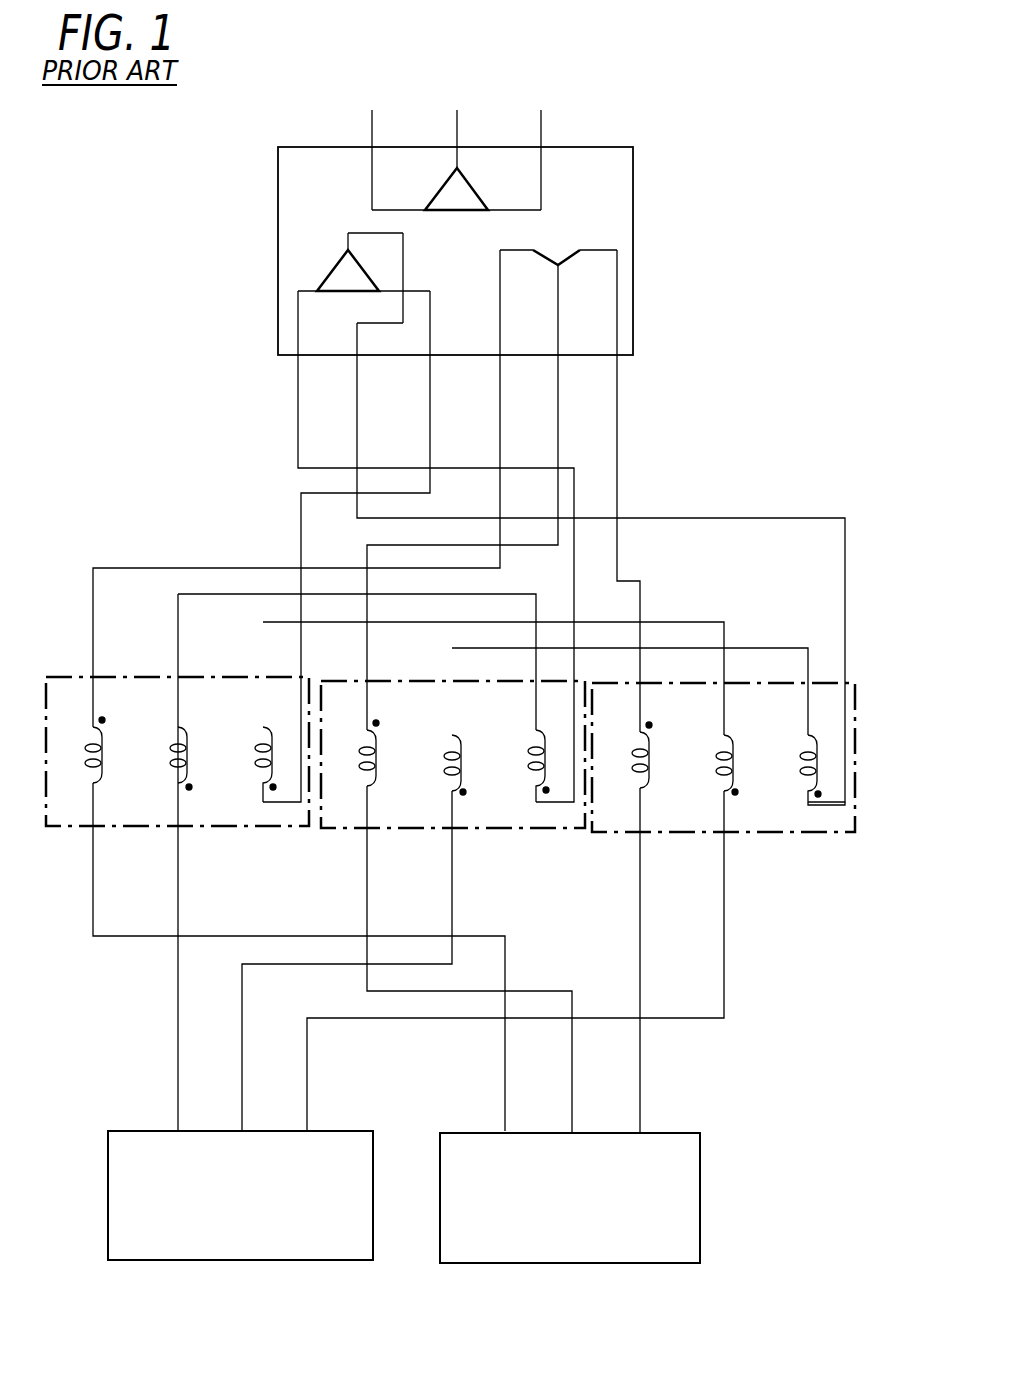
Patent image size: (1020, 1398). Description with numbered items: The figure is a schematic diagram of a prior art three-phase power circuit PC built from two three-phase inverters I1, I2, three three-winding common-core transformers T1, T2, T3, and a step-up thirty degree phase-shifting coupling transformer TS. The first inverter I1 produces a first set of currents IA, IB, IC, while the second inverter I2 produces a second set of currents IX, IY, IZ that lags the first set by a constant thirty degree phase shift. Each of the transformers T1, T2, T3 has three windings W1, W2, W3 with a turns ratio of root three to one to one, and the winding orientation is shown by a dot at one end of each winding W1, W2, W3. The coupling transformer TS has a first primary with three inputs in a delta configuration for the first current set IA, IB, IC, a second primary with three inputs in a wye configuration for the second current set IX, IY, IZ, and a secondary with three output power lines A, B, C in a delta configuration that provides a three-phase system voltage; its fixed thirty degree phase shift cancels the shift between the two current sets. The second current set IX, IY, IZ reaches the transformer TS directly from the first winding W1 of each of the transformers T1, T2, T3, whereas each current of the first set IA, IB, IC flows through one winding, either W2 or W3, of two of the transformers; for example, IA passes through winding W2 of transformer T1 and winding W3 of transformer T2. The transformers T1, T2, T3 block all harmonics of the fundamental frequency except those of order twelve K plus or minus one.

The step-up phase-shifting coupling transformer TS is at (633, 193).
The output power line A is at (371, 144).
The output power line B is at (457, 123).
The output power line C is at (541, 144).
The first set current IA is at (290, 367).
The first set current IB is at (347, 367).
The first set current IC is at (419, 367).
The second set current IX is at (488, 367).
The second set current IY is at (544, 367).
The second set current IZ is at (601, 367).
The three-winding common-core transformer T1 is at (258, 826).
The three-winding common-core transformer T2 is at (533, 828).
The three-winding common-core transformer T3 is at (802, 832).
The first winding W1 is at (91, 733).
The second winding W2 is at (176, 733).
The third winding W3 is at (261, 733).
The first three-phase inverter I1 is at (310, 1260).
The second three-phase inverter I2 is at (640, 1263).
The three-phase power circuit PC is at (430, 1361).